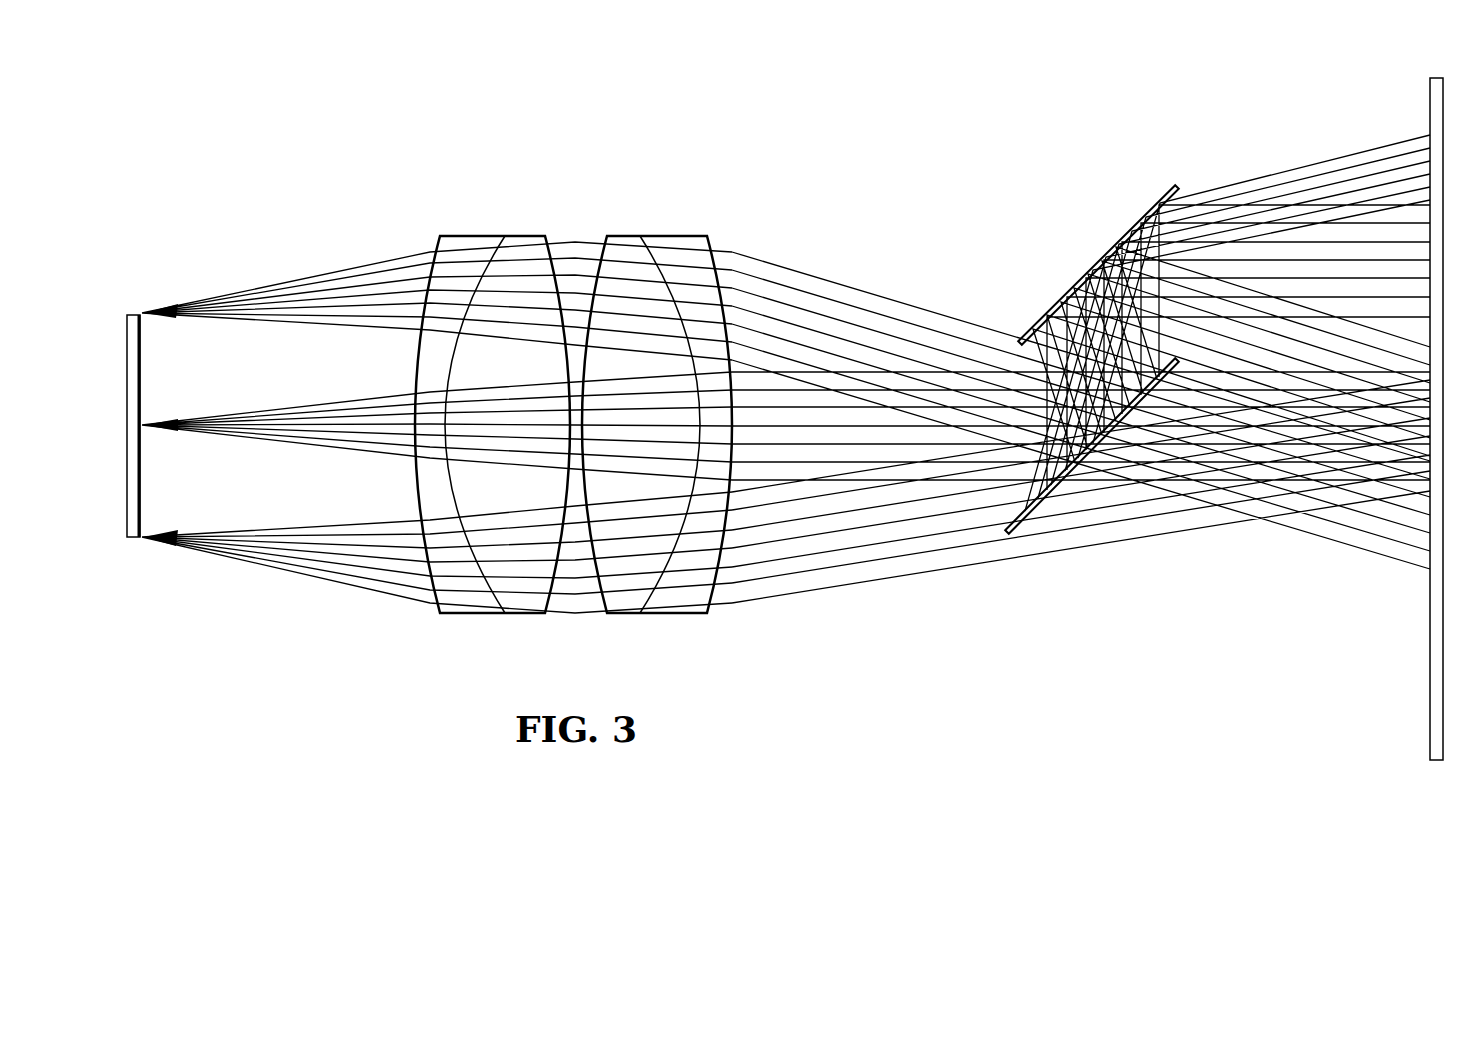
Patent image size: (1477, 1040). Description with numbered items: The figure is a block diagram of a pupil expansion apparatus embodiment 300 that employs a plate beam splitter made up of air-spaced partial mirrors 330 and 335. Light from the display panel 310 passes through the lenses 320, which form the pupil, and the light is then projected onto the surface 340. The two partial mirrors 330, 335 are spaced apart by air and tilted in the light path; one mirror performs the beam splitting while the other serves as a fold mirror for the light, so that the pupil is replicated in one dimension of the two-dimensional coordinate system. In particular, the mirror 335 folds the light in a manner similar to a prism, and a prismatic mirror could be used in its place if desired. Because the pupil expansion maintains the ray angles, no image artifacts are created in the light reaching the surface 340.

The pupil expansion apparatus embodiment 300 is at (514, 111).
The display panel 310 is at (128, 314).
The lenses 320 is at (711, 627).
The partial mirror 330 is at (1022, 537).
The mirror 335 is at (1097, 268).
The surface 340 is at (1437, 78).